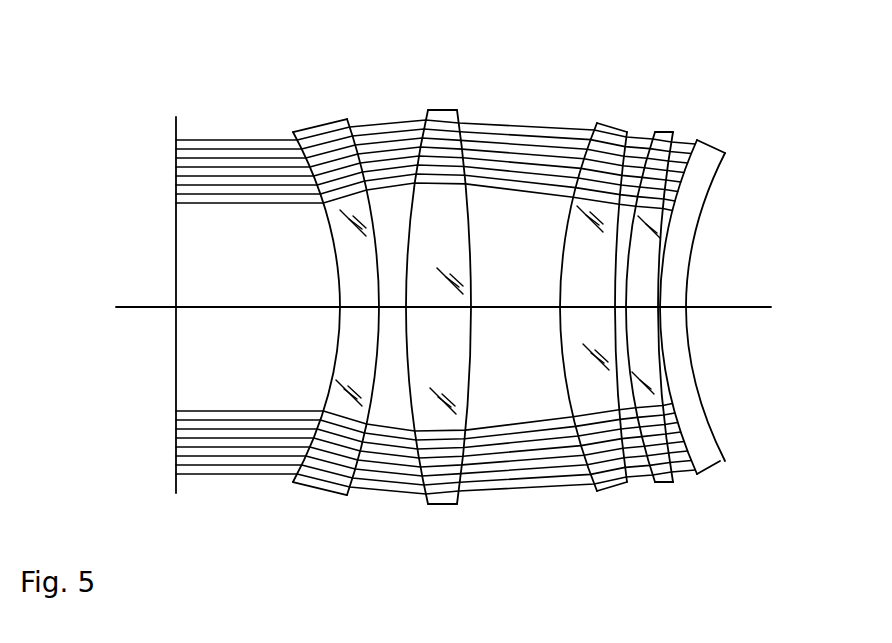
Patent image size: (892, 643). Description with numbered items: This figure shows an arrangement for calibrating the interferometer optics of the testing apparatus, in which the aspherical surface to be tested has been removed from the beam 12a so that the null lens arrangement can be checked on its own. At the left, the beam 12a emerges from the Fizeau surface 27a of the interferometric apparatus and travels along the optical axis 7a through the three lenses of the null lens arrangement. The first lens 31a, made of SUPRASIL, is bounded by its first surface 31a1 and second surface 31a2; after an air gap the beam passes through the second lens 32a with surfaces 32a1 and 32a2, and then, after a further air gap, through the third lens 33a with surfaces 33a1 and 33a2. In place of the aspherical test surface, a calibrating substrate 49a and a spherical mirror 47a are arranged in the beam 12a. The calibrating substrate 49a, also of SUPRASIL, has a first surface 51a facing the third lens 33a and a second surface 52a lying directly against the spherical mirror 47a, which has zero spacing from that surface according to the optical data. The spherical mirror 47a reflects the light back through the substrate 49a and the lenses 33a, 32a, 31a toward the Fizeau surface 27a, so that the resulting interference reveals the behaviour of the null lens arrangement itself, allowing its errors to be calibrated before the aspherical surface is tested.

The optical axis 7a is at (735, 307).
The Fizeau surface 27a is at (177, 472).
The lens 31a is at (320, 309).
The surface 31a1 is at (298, 142).
The surface 31a2 is at (356, 273).
The lens 32a is at (452, 308).
The surface 32a1 is at (426, 120).
The surface 32a2 is at (481, 276).
The lens 33a is at (617, 310).
The surface 33a1 is at (597, 129).
The surface 33a2 is at (645, 270).
The beam 12a is at (652, 132).
The spherical mirror 47a is at (697, 140).
The calibrating substrate 49a is at (665, 485).
The surface 51a is at (648, 477).
The surface 52a is at (675, 477).